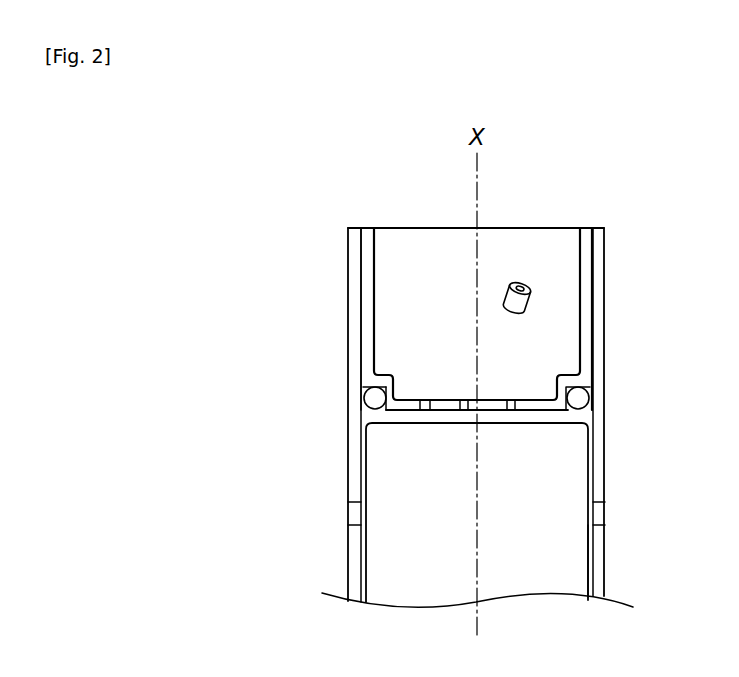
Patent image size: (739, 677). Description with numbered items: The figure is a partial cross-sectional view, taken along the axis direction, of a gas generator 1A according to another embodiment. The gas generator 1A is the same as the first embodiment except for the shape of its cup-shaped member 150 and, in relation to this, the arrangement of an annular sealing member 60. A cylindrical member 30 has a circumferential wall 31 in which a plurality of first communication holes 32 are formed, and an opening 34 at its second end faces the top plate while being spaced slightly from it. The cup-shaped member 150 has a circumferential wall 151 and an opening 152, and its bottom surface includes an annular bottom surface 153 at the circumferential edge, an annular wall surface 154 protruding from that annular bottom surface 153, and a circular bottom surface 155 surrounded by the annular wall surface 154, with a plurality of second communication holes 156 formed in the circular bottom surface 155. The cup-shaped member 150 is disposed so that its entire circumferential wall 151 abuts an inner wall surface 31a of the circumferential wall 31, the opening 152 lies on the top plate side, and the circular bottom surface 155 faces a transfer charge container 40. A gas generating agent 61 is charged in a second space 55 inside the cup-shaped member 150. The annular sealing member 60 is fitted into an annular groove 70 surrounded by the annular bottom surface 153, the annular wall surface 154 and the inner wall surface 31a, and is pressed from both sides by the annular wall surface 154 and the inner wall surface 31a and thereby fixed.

The gas generator 1A is at (546, 214).
The cylindrical member 30 is at (606, 310).
The circumferential wall 31 is at (605, 470).
The inner wall surface 31a is at (588, 557).
The first communication holes 32 is at (596, 514).
The opening 34 is at (365, 228).
The transfer charge container 40 is at (433, 583).
The second space 55 is at (430, 281).
The annular sealing member 60 is at (577, 401).
The gas generating agent 61 is at (517, 284).
The annular groove 70 is at (583, 387).
The cup-shaped member 150 is at (592, 268).
The circumferential wall 151 is at (583, 342).
The opening 152 is at (508, 228).
The annular bottom surface 153 is at (364, 386).
The annular wall surface 154 is at (385, 410).
The circular bottom surface 155 is at (434, 410).
The second communication holes 156 is at (509, 412).